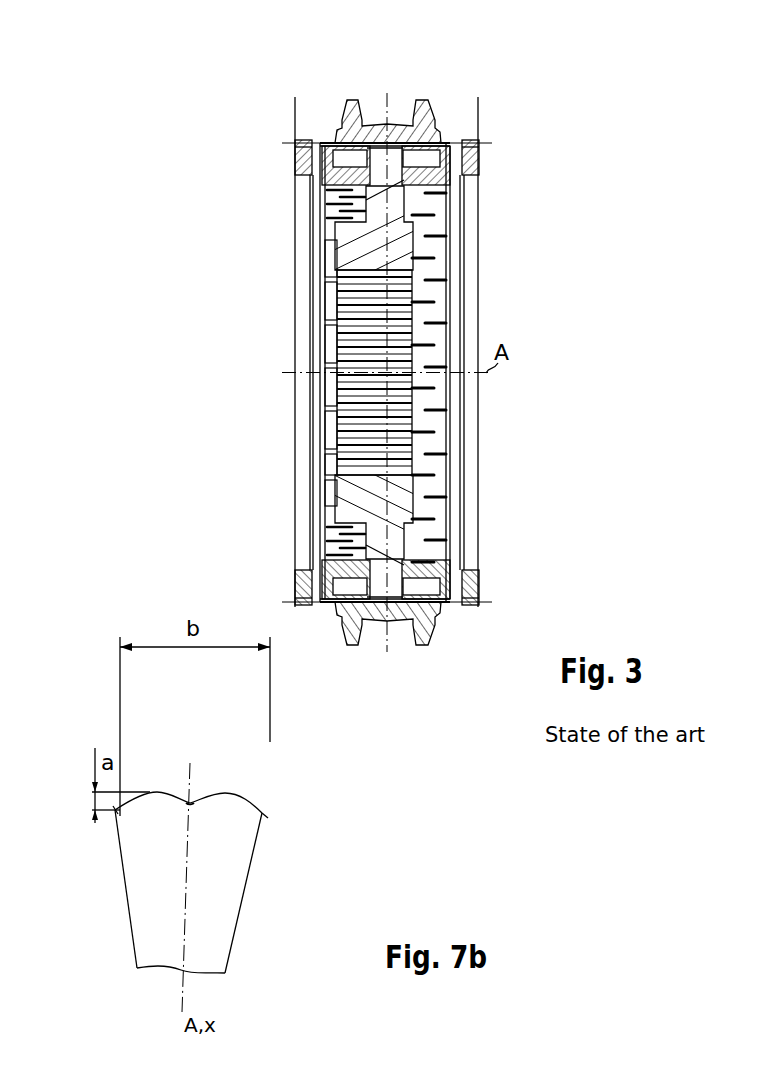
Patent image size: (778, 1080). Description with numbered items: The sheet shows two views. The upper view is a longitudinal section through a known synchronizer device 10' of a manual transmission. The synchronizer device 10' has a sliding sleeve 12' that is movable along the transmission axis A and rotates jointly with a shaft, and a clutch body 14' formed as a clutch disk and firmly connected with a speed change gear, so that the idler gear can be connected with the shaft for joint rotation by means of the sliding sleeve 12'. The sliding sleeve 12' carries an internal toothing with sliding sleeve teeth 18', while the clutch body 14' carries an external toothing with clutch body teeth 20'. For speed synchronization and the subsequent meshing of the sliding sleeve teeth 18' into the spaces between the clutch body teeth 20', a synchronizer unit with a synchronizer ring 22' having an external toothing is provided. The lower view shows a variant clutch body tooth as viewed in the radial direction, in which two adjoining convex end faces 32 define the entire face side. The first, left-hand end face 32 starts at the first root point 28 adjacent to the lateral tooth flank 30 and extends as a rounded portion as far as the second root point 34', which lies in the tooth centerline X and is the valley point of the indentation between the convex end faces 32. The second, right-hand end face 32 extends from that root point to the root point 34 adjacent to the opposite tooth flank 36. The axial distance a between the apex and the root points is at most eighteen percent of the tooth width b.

In FIG. 3, the synchronizer device 10' is at (295, 313).
In FIG. 3, the sliding sleeve 12' is at (386, 328).
In FIG. 3, the clutch body 14' is at (330, 366).
In FIG. 3, the sliding sleeve teeth 18' is at (366, 308).
In FIG. 3, the clutch body teeth 20' is at (341, 357).
In FIG. 3, the synchronizer ring 22' is at (332, 361).
In FIG. 7B, the first root point 28 is at (115, 812).
In FIG. 7B, the lateral tooth flank 30 is at (128, 920).
In FIG. 7B, the convex end faces 32 is at (150, 792).
In FIG. 7B, the root point 34 is at (308, 802).
In FIG. 7B, the second root point 34' is at (223, 754).
In FIG. 7B, the opposite tooth flank 36 is at (237, 927).